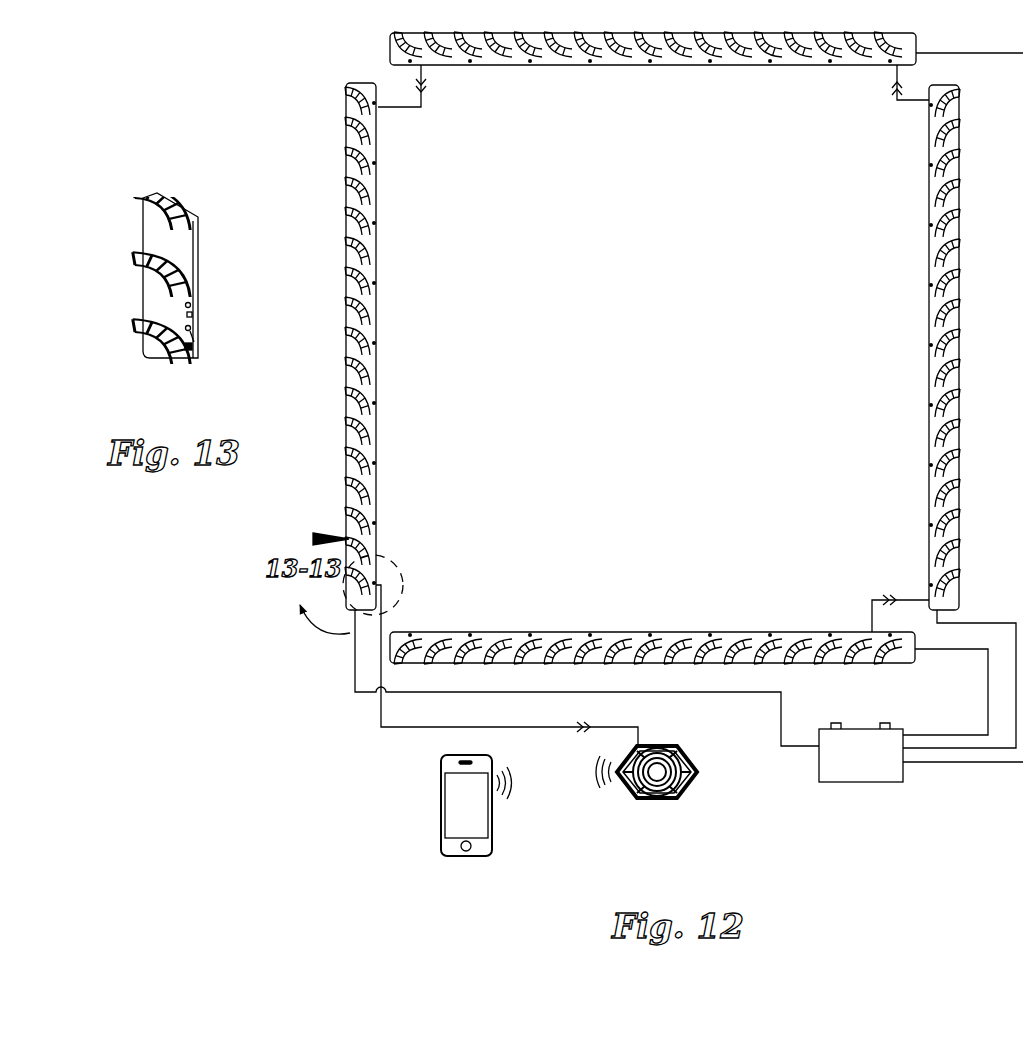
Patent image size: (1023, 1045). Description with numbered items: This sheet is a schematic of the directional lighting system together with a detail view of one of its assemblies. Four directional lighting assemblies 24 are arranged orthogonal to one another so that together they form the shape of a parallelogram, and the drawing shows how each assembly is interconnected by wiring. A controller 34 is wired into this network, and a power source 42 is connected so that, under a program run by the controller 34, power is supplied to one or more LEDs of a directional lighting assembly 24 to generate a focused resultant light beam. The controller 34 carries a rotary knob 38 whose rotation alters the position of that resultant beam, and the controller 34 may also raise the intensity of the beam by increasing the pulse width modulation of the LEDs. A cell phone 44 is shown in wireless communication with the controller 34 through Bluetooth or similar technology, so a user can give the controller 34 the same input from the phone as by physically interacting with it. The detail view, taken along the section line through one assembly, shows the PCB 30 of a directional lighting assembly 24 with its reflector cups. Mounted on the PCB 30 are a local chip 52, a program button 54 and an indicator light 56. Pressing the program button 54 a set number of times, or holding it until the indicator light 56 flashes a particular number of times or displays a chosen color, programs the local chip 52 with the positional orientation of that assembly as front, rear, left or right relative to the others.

In FIG. 12, the directional lighting assembly 24 is at (702, 92).
In FIG. 13, the PCB 30 is at (192, 250).
In FIG. 12, the controller 34 is at (705, 800).
In FIG. 12, the rotary knob 38 is at (657, 779).
In FIG. 12, the power source 42 is at (857, 775).
In FIG. 12, the cell phone 44 is at (427, 810).
In FIG. 13, the local chip 52 is at (196, 350).
In FIG. 13, the program button 54 is at (194, 314).
In FIG. 13, the indicator light 56 is at (194, 340).